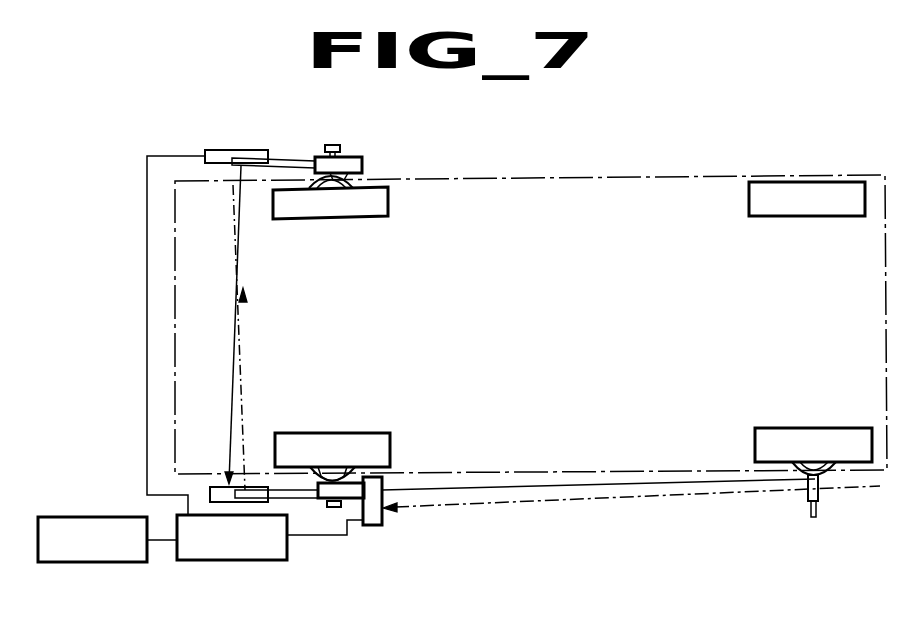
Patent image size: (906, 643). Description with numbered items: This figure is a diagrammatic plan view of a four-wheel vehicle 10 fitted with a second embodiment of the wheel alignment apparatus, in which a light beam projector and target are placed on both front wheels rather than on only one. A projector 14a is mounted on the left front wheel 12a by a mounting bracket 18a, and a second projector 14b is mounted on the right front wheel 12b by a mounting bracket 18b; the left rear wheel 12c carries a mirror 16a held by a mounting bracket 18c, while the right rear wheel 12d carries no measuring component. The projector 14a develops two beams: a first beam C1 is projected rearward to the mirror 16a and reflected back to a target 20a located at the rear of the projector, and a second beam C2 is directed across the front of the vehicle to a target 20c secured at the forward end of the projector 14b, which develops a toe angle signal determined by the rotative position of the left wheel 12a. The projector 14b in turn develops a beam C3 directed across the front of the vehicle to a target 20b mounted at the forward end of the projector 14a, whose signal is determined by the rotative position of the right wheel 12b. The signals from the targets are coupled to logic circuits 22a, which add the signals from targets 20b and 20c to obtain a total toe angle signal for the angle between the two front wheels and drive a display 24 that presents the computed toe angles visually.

The vehicle 10 is at (620, 176).
The left front wheel 12a is at (390, 443).
The right front wheel 12b is at (388, 210).
The left rear wheel 12c is at (762, 443).
The right rear wheel 12d is at (760, 203).
The projector 14a is at (352, 499).
The projector 14b is at (345, 160).
The mirror 16a is at (810, 496).
The mounting bracket 18a is at (327, 463).
The mounting bracket 18b is at (388, 190).
The mounting bracket 18c is at (824, 470).
The target 20a is at (384, 522).
The target 20b is at (267, 503).
The target 20c is at (236, 150).
The logic circuits 22a is at (212, 561).
The display 24 is at (80, 563).
The light beam C1 is at (545, 494).
The light beam C2 is at (248, 268).
The light beam C3 is at (230, 270).